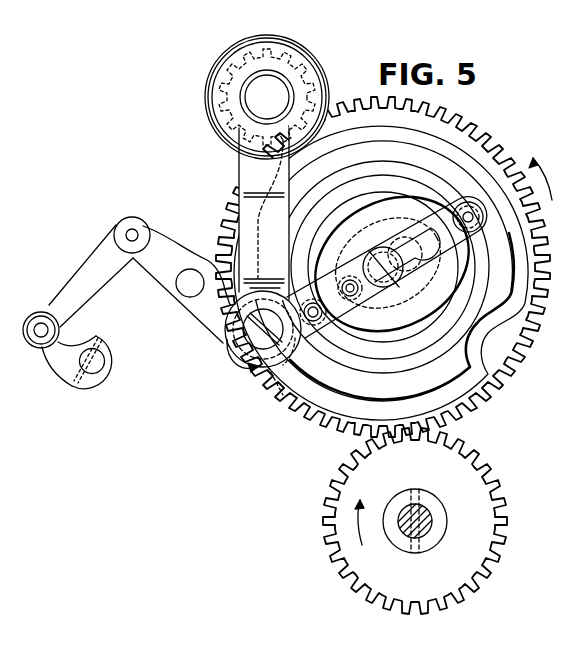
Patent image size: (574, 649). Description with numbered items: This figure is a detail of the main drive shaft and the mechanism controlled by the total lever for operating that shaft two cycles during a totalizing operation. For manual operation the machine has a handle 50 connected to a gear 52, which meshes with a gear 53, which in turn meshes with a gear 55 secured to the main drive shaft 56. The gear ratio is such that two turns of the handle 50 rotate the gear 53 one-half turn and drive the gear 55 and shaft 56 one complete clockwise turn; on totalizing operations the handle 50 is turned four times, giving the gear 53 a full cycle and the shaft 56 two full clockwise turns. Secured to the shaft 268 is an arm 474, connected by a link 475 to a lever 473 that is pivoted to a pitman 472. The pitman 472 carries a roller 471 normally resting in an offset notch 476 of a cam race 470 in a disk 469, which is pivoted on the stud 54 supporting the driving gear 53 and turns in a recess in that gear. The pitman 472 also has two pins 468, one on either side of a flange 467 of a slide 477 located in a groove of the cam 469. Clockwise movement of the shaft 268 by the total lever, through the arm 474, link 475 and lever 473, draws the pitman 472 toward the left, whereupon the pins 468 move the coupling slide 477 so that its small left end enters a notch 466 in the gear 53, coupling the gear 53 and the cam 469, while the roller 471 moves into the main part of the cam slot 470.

The handle 50 is at (233, 307).
The gear 52 is at (277, 52).
The gear 53 is at (529, 345).
The stud 54 is at (387, 283).
The gear 55 is at (463, 474).
The main drive shaft 56 is at (425, 527).
The shaft 268 is at (97, 372).
The notch 466 is at (272, 393).
The flange 467 is at (290, 341).
The pins 468 is at (313, 300).
The disk 469 is at (370, 178).
The cam race 470 is at (405, 360).
The roller 471 is at (408, 362).
The pitman 472 is at (419, 275).
The lever 473 is at (226, 342).
The arm 474 is at (110, 368).
The link 475 is at (78, 300).
The offset notch 476 is at (347, 360).
The slide 477 is at (392, 264).